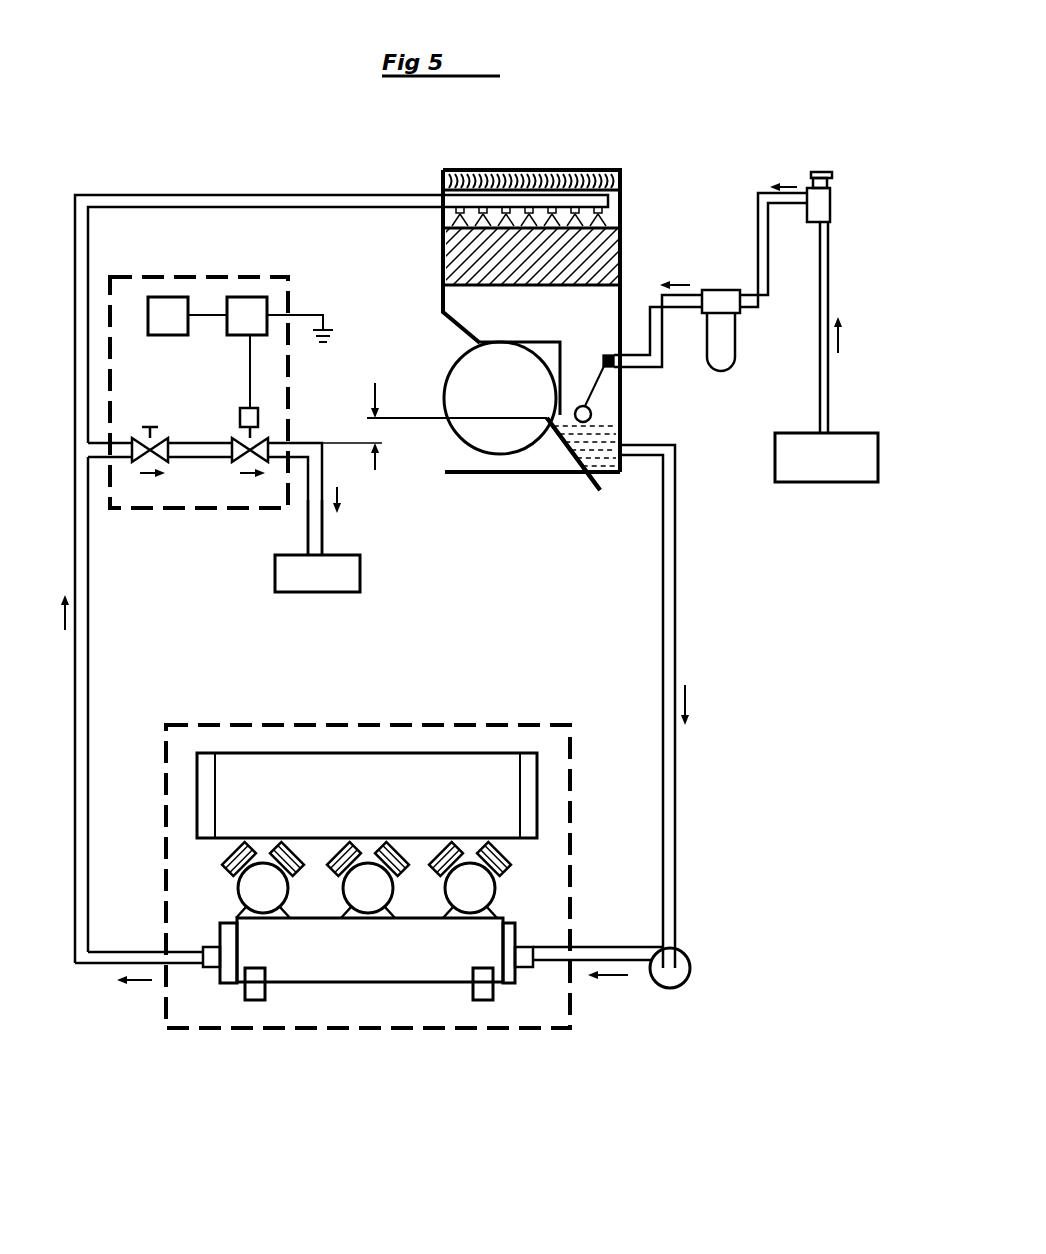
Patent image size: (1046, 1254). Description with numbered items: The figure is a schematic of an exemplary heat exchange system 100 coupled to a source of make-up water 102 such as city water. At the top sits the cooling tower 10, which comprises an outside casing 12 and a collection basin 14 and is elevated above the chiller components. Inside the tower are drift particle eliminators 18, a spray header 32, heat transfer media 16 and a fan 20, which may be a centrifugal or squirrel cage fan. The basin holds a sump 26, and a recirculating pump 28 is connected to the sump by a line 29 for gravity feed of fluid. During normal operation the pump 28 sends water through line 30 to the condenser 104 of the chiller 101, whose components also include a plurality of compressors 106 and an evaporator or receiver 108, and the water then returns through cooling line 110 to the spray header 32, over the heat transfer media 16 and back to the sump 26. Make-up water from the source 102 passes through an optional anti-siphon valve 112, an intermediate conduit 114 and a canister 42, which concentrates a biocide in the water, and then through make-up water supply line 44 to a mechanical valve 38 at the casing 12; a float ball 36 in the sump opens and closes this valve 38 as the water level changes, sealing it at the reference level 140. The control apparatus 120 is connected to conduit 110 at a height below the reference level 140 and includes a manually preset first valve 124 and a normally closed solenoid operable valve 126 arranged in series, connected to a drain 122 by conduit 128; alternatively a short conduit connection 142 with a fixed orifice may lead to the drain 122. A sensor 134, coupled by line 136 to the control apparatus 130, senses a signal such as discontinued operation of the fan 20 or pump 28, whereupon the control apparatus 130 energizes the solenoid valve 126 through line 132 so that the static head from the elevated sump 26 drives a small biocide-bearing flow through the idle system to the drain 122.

The heat exchange system 100 is at (330, 154).
The cooling tower 10 is at (432, 245).
The outside casing 12 is at (621, 297).
The collection basin 14 is at (625, 432).
The heat transfer media 16 is at (455, 275).
The drift particle eliminators 18 is at (508, 170).
The fan 20 is at (468, 356).
The sump 26 is at (592, 484).
The recirculating pump 28 is at (688, 958).
The line 29 is at (676, 545).
The line 30 is at (603, 946).
The spray header 32 is at (608, 199).
The float ball 36 is at (593, 412).
The mechanical valve 38 is at (603, 361).
The canister 42 is at (735, 345).
The make-up water supply line 44 is at (662, 333).
The chiller 101 is at (407, 716).
The source of make-up water 102 is at (850, 433).
The condenser 104 is at (337, 982).
The compressors 106 is at (493, 883).
The evaporator or receiver 108 is at (537, 815).
The cooling line 110 is at (75, 710).
The anti-siphon valve 112 is at (830, 208).
The intermediate conduit 114 is at (758, 222).
The apparatus 120 is at (236, 270).
The drain 122 is at (360, 578).
The first valve 124 is at (169, 463).
The solenoid operable valve 126 is at (233, 462).
The conduit 128 is at (322, 546).
The control apparatus 130 is at (270, 343).
The line 132 is at (250, 394).
The sensor 134 is at (172, 337).
The line 136 is at (207, 318).
The reference level 140 is at (400, 418).
The short conduit connection 142 is at (305, 441).